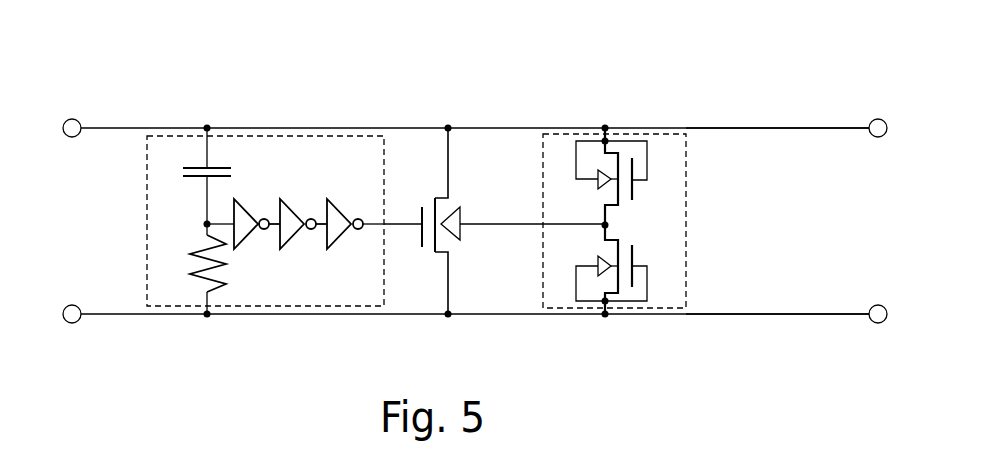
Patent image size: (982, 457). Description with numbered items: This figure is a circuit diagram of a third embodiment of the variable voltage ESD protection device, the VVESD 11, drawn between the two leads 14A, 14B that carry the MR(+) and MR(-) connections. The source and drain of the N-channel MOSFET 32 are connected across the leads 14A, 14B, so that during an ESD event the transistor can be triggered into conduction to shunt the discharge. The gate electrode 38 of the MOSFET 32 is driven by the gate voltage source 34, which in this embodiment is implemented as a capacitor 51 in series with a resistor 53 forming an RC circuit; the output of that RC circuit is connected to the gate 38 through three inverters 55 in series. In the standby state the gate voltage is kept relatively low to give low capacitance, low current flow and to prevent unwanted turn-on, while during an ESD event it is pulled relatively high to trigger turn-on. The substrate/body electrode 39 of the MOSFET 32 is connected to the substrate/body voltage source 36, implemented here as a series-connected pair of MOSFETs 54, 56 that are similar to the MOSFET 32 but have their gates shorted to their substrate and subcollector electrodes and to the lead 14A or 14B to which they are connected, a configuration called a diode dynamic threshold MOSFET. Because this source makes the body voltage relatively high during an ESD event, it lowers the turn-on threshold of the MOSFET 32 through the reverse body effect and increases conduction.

The VVESD 11 is at (218, 85).
The lead 14A is at (802, 124).
The lead 14B is at (810, 317).
The N-channel MOSFET 32 is at (455, 175).
The gate voltage source 34 is at (292, 160).
The substrate/body voltage source 36 is at (668, 152).
The gate electrode 38 is at (405, 232).
The substrate/body electrode 39 is at (498, 232).
The capacitor 51 is at (178, 174).
The resistor 53 is at (178, 265).
The MOSFET 54 is at (640, 193).
The inverters 55 is at (297, 268).
The MOSFET 56 is at (640, 253).